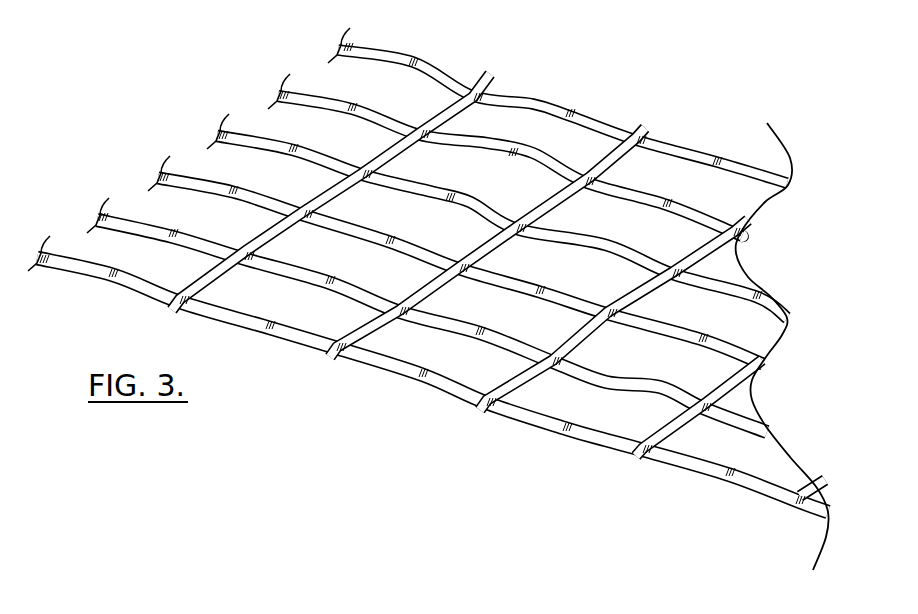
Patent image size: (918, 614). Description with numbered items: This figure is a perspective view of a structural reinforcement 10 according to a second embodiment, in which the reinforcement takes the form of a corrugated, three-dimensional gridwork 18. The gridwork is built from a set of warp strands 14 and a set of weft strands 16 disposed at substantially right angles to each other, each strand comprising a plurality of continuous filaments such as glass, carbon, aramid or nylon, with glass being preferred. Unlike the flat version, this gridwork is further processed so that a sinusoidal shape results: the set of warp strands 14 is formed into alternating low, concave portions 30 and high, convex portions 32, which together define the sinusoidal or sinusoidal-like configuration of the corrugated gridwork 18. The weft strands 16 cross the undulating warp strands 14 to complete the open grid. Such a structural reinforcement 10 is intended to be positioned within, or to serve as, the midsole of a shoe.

The structural reinforcement member 10 is at (428, 288).
The warp strands 14 is at (318, 93).
The weft strands 16 is at (360, 328).
The corrugated, three-dimensional gridwork 18 is at (583, 433).
The low (concave) portions 30 is at (640, 134).
The high (convex) portions 32 is at (513, 152).